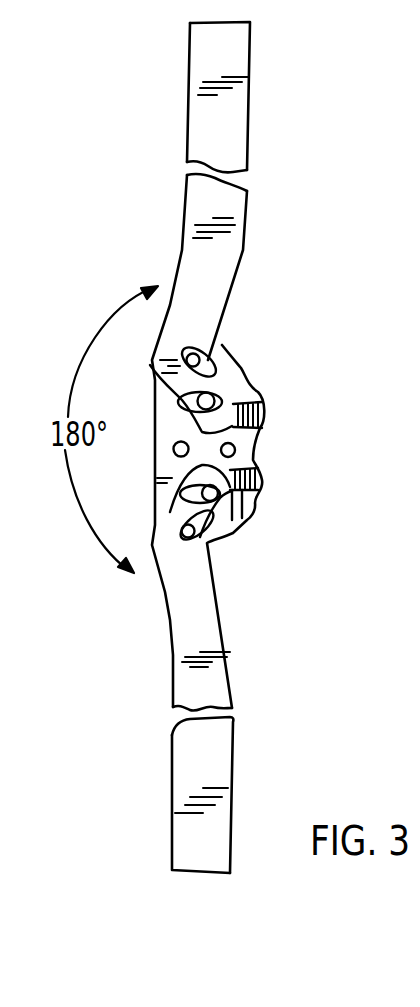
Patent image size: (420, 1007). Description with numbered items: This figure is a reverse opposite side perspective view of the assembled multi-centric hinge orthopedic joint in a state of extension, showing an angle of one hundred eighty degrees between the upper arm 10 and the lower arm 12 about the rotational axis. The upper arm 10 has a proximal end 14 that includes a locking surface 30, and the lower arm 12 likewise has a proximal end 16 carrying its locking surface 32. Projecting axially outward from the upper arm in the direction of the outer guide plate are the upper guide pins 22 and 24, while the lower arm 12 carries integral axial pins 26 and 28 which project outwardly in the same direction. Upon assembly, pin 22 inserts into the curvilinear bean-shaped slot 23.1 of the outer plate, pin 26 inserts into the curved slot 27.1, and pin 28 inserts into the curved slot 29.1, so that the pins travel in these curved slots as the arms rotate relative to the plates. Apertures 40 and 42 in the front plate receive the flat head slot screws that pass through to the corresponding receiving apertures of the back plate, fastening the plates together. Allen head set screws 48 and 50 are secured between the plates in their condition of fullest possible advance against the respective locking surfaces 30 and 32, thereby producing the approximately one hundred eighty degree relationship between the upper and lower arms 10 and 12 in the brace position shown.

The upper arm 10 is at (233, 120).
The lower arm 12 is at (222, 757).
The proximal end 14 is at (299, 344).
The locking surface 30 is at (240, 362).
The proximal end 16 is at (294, 544).
The locking surface 32 is at (236, 533).
The upper guide pin 22 is at (195, 346).
The upper guide pin 24 is at (178, 392).
The axial pin 26 is at (163, 500).
The axial pin 28 is at (210, 515).
The aperture 40 is at (172, 450).
The aperture 42 is at (236, 448).
The Allen head set screw 48 is at (268, 412).
The Allen head set screw 50 is at (258, 492).
The curvilinear bean-shaped slot 23.1 is at (215, 347).
The curved slot 27.1 is at (137, 525).
The curved slot 29.1 is at (205, 548).